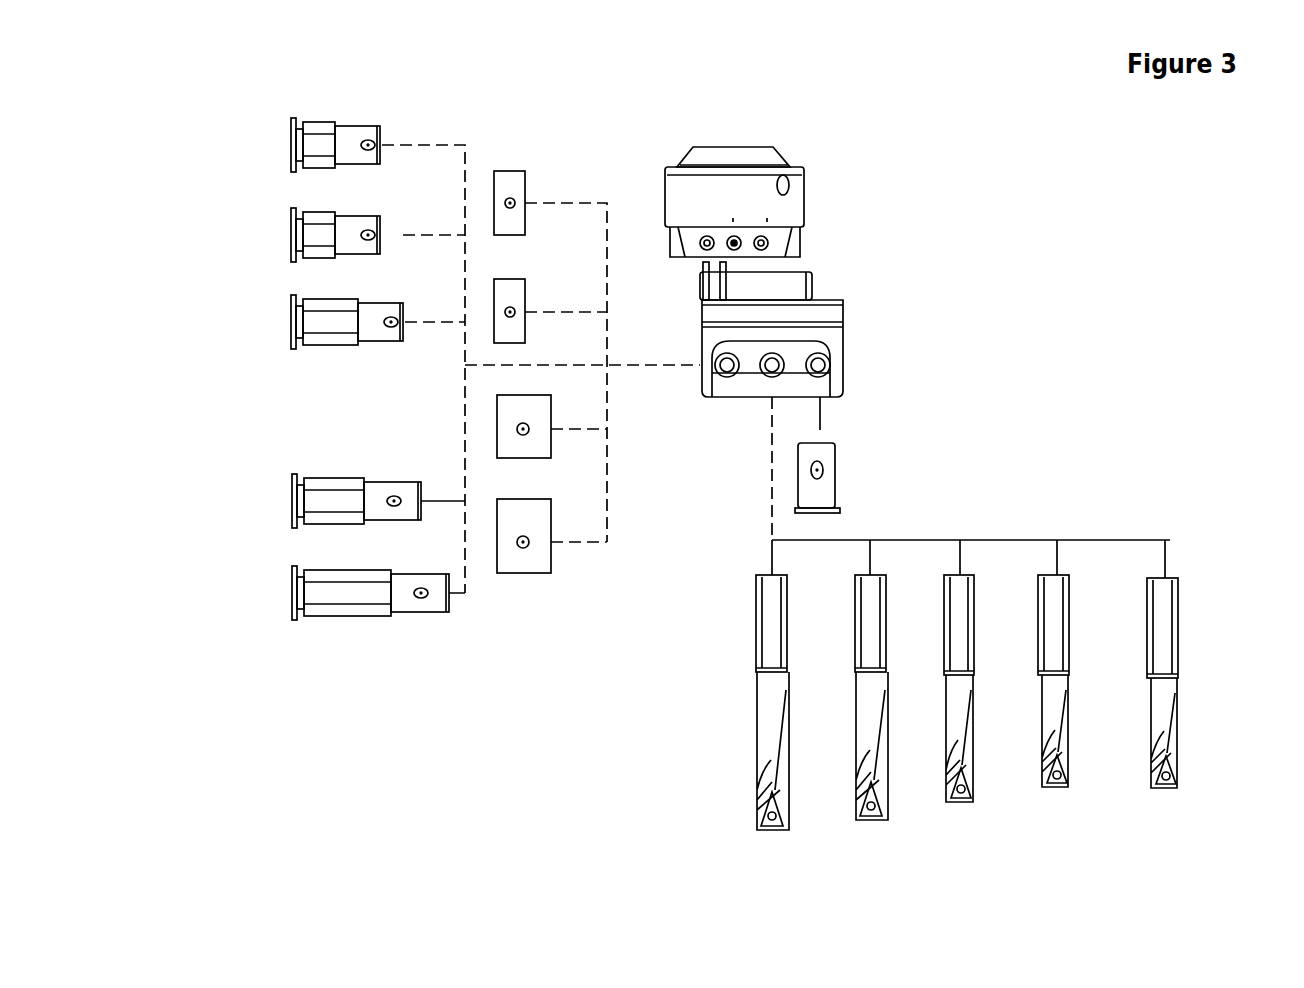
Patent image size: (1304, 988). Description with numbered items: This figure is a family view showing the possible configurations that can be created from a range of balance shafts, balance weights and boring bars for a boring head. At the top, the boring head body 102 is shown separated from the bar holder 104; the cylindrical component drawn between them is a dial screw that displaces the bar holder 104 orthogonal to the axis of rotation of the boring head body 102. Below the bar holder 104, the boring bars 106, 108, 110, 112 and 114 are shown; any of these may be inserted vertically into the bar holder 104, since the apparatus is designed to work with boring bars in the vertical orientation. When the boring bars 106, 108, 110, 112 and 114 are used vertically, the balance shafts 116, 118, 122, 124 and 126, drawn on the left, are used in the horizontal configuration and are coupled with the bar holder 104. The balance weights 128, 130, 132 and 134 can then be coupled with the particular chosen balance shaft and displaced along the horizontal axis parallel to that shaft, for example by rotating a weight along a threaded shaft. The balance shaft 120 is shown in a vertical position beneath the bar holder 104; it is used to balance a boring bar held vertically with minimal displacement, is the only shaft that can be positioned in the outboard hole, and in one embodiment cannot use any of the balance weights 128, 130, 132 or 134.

The boring head body 102 is at (727, 145).
The bar holder 104 is at (845, 308).
The boring bar 106 is at (1172, 793).
The boring bar 108 is at (1062, 793).
The boring bar 110 is at (963, 806).
The boring bar 112 is at (866, 822).
The boring bar 114 is at (766, 832).
The balance shaft 116 is at (289, 592).
The balance shaft 118 is at (288, 501).
The balance shaft 120 is at (837, 463).
The balance shaft 122 is at (285, 321).
The balance shaft 124 is at (288, 244).
The balance shaft 126 is at (288, 148).
The balance weight 128 is at (553, 573).
The balance weight 130 is at (553, 455).
The balance weight 132 is at (527, 290).
The balance weight 134 is at (505, 168).